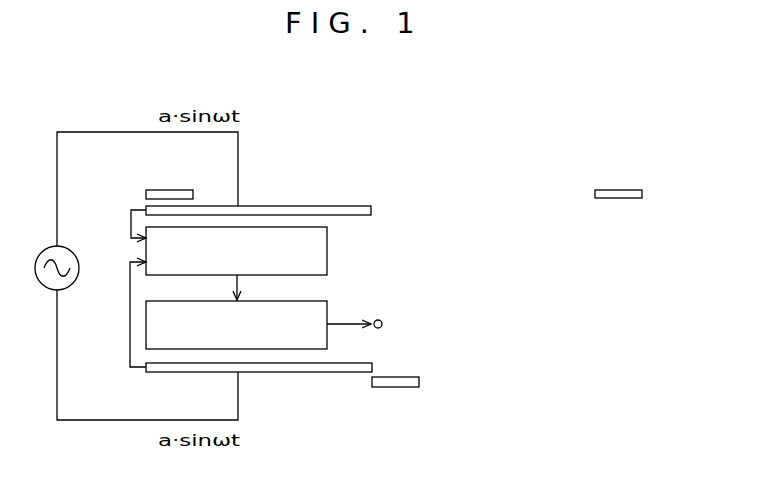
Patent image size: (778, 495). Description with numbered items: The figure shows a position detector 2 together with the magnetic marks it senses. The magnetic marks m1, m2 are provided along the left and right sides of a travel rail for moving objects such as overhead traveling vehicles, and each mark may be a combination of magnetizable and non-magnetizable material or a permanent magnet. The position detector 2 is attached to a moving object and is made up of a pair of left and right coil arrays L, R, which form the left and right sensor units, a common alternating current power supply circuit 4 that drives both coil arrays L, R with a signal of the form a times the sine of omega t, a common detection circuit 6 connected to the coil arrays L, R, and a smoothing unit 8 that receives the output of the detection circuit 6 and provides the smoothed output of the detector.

The position detector 2 is at (395, 205).
The alternating current power supply circuit 4 is at (72, 284).
The detection circuit 6 is at (327, 249).
The smoothing unit 8 is at (327, 336).
The left coil array L is at (325, 205).
The right coil array R is at (311, 373).
The magnetic mark m1 is at (164, 189).
The magnetic mark m2 is at (400, 389).